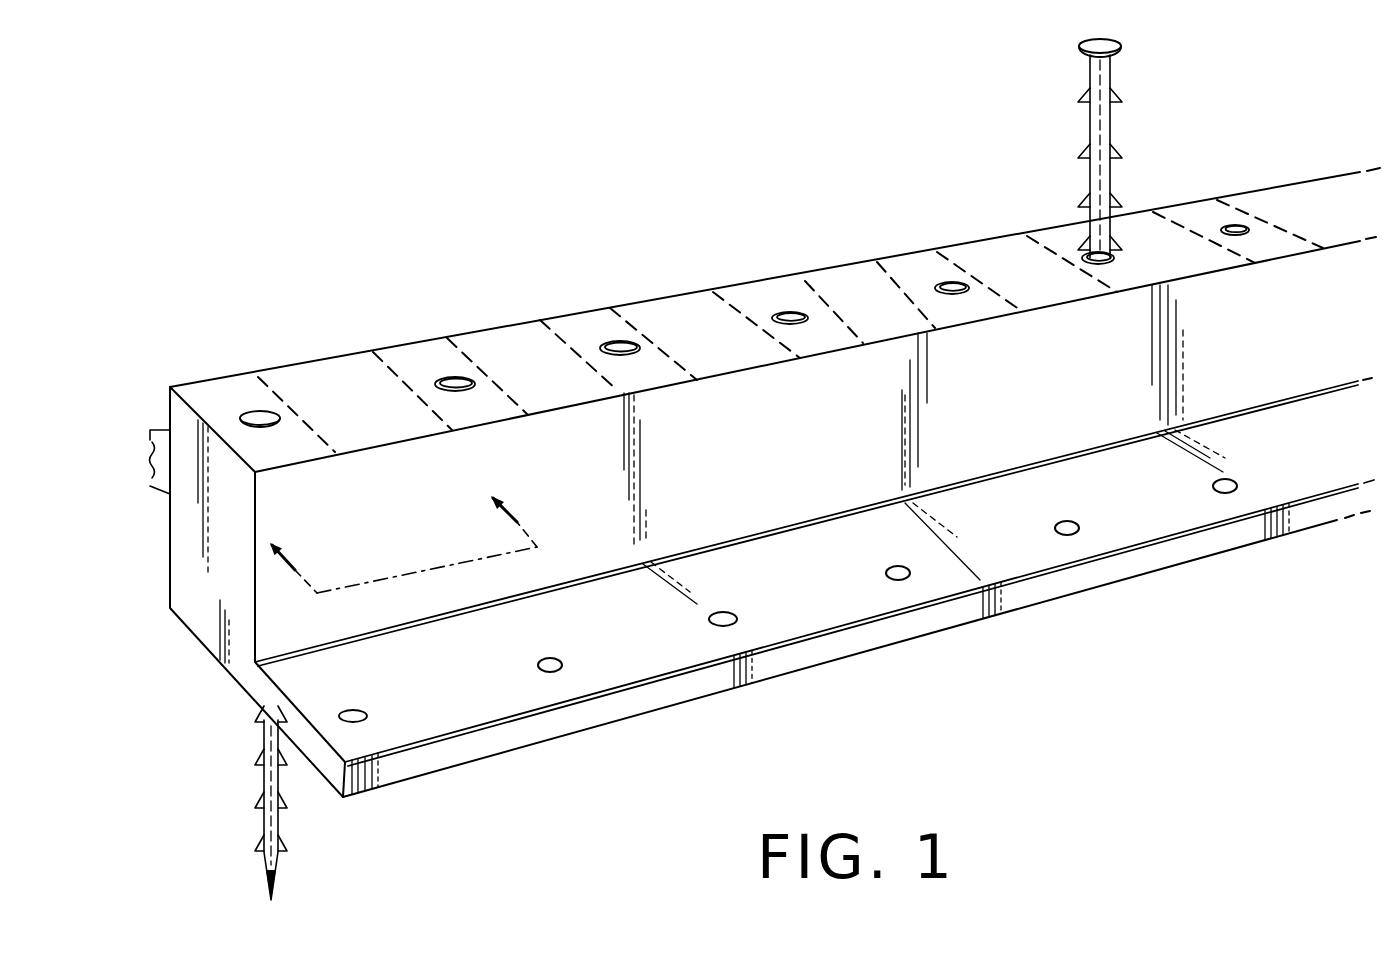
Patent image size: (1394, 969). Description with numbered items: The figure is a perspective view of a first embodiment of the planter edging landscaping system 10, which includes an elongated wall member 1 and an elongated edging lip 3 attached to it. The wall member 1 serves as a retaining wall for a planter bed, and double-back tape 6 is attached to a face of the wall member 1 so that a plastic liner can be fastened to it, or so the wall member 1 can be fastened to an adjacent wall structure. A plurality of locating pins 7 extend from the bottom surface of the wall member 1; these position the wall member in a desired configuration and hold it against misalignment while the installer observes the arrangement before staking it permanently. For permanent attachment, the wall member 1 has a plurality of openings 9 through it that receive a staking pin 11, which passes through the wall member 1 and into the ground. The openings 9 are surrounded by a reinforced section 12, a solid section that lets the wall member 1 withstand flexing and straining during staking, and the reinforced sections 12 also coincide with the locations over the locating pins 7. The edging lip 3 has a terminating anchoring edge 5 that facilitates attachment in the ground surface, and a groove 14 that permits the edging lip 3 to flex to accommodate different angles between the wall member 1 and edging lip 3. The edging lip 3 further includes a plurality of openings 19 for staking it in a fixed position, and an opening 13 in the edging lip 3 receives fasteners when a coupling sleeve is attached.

The elongated wall member 1 is at (1288, 187).
The elongated edging lip 3 is at (1197, 515).
The terminating anchoring edge 5 is at (340, 792).
The double-back tape 6 is at (150, 490).
The locating pins 7 is at (263, 828).
The openings 9 is at (478, 376).
The planter edging landscaping system 10 is at (358, 228).
The staking pin 11 is at (1112, 131).
The reinforced section 12 is at (917, 270).
The opening in the edging lip 13 is at (244, 419).
The groove 14 is at (262, 663).
The openings in the edging lip 19 is at (567, 668).